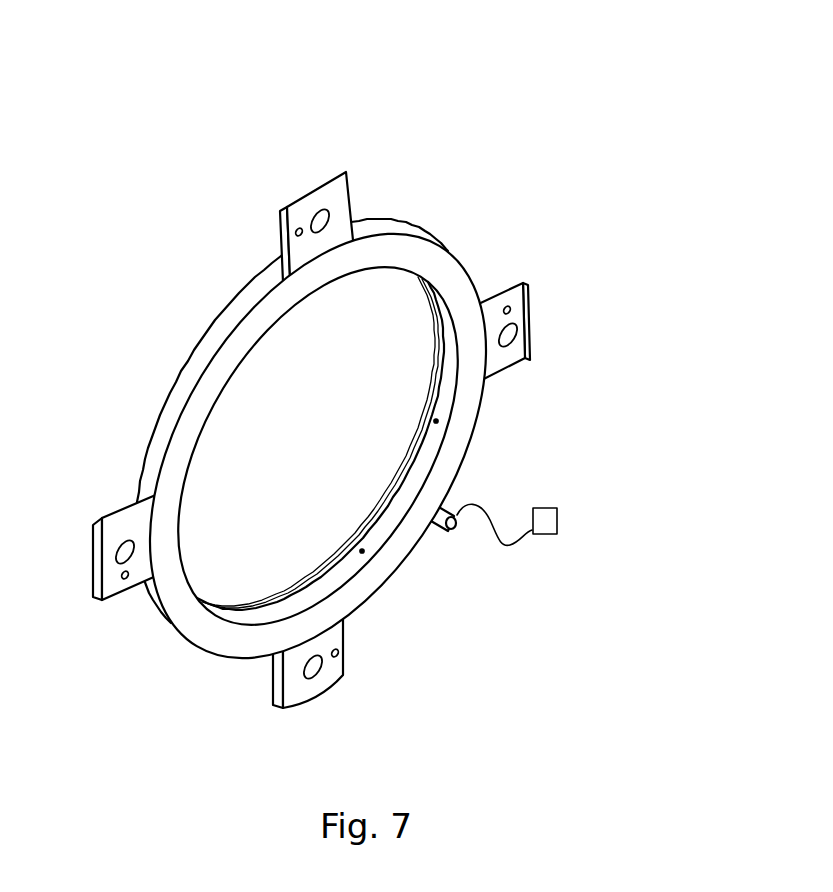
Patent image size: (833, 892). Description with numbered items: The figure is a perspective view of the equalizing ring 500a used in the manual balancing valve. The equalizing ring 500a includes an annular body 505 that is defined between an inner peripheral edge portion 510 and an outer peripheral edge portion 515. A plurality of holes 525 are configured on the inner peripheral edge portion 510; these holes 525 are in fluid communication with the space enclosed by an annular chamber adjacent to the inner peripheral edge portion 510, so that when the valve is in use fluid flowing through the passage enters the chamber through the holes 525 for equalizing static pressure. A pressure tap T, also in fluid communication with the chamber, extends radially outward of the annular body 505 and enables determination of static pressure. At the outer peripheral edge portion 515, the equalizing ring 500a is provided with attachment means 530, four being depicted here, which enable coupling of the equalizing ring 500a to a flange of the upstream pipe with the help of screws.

The equalizing ring 500a is at (441, 380).
The annular body 505 is at (356, 442).
The inner peripheral edge portion 510 is at (311, 593).
The outer peripheral edge portion 515 is at (213, 333).
The holes 525 is at (436, 421).
The attachment means 530 is at (350, 184).